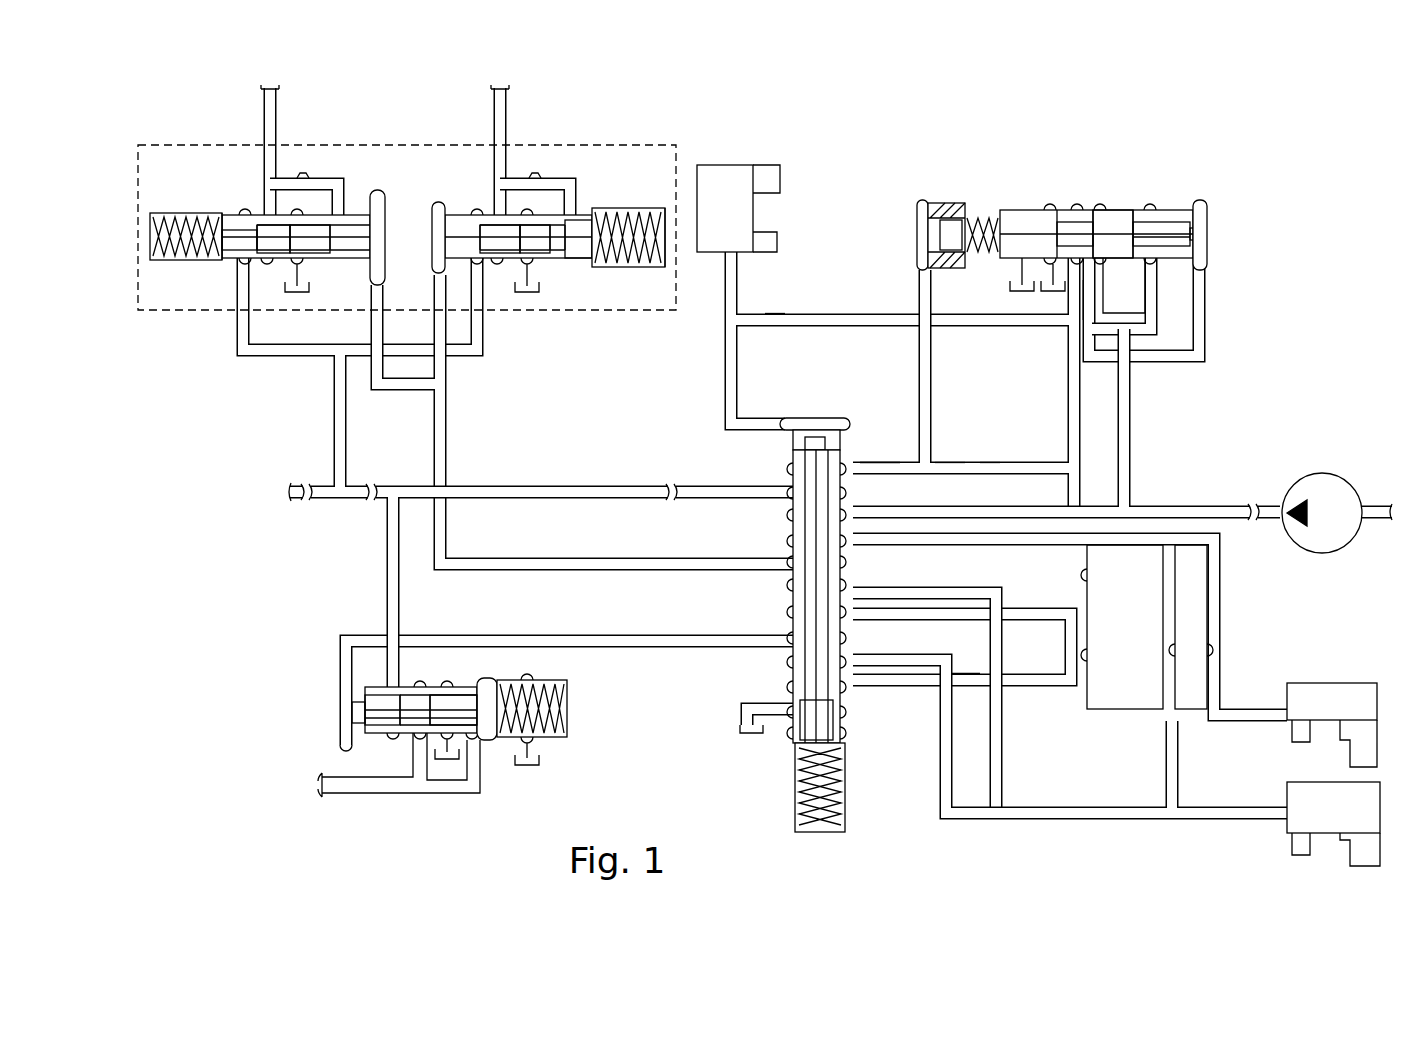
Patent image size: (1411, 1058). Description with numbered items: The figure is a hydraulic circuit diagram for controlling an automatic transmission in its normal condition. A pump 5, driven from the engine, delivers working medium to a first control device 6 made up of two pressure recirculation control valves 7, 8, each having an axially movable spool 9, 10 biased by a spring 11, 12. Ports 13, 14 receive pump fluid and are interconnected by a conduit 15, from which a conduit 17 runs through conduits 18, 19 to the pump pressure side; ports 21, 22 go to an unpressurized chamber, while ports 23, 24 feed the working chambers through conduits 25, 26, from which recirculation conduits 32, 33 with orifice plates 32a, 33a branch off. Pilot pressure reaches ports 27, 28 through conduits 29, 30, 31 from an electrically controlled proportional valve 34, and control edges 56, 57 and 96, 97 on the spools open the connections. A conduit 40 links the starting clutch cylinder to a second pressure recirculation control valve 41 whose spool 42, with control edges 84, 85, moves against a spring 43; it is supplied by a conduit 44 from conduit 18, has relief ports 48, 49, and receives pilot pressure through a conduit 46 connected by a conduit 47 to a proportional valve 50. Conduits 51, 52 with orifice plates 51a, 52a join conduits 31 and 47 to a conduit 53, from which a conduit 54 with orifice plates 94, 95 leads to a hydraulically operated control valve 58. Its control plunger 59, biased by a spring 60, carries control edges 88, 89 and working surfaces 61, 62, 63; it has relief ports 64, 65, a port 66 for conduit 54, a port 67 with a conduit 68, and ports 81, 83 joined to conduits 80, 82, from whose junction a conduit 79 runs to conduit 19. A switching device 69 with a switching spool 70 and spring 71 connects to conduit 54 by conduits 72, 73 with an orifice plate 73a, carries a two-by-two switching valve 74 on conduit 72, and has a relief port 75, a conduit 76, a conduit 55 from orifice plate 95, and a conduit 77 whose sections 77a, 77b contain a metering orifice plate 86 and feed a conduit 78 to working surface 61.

The pump 5 is at (1315, 474).
The first control device 6 is at (418, 145).
The pressure recirculation control valve 7 is at (203, 210).
The pressure recirculation control valve 8 is at (617, 208).
The spool 9 is at (228, 251).
The spool 10 is at (568, 262).
The spring 11 is at (166, 259).
The spring 12 is at (650, 264).
The port 13 is at (241, 266).
The port 14 is at (480, 266).
The conduit 15 is at (270, 357).
The conduit 17 is at (333, 447).
The conduit 18 is at (505, 488).
The conduit 19 is at (975, 507).
The port 21 is at (300, 266).
The port 22 is at (535, 266).
The port 23 is at (258, 210).
The port 24 is at (490, 208).
The conduit 25 is at (278, 112).
The conduit 26 is at (506, 112).
The port 27 is at (382, 273).
The port 28 is at (436, 263).
The conduit 29 is at (387, 391).
The conduit 30 is at (505, 558).
The conduit 31 is at (965, 590).
The conduit 32 is at (343, 182).
The orifice plate 32a is at (306, 176).
The conduit 33 is at (575, 182).
The orifice plate 33a is at (538, 176).
The second control device 34 is at (1320, 713).
The conduit 40 is at (365, 793).
The first control device 41 is at (574, 731).
The spool 42 is at (376, 696).
The spring 43 is at (540, 690).
The conduit 44 is at (385, 602).
The conduit 46 is at (505, 637).
The conduit 47 is at (895, 655).
The port 48 is at (470, 757).
The port 49 is at (542, 751).
The second control device 50 is at (1320, 816).
The conduit 51 is at (1222, 590).
The orifice plate 51a is at (1215, 653).
The conduit 52 is at (1180, 760).
The orifice plate 52a is at (1195, 655).
The conduit 53 is at (1105, 548).
The conduit 54 is at (1068, 387).
The conduit 55 is at (965, 692).
The control edge 56 is at (257, 233).
The control edge 57 is at (292, 246).
The control valve 58 is at (1027, 184).
The control plunger 59 is at (1180, 226).
The spring 60 is at (975, 213).
The first working surface 61 is at (928, 242).
The second working surface 62 is at (1145, 226).
The third working surface 63 is at (1200, 229).
The port 64 is at (1012, 272).
The port 65 is at (1045, 290).
The port 66 is at (1070, 285).
The port 67 is at (1207, 258).
The conduit 68 is at (1207, 352).
The switching device 69 is at (840, 410).
The switching spool 70 is at (834, 722).
The spring 71 is at (842, 786).
The conduit 72 is at (740, 372).
The conduit 73 is at (825, 319).
The orifice plate 73a is at (775, 319).
The 2/2 switching valve 74 is at (713, 195).
The port 75 is at (775, 706).
The conduit 76 is at (1025, 617).
The conduit 77 is at (1043, 458).
The section 77a is at (875, 475).
The section 77b is at (950, 461).
The conduit 78 is at (918, 410).
The conduit 79 is at (1132, 433).
The conduit 80 is at (1089, 316).
The port 81 is at (1110, 268).
The conduit 82 is at (1152, 340).
The port 83 is at (1155, 268).
The control edge 84 is at (380, 734).
The control edge 85 is at (440, 693).
The metering orifice plate 86 is at (990, 461).
The control edge 88 is at (1050, 209).
The control edge 89 is at (1115, 211).
The orifice plate 94 is at (1090, 585).
The orifice plate 95 is at (1090, 655).
The control edge 96 is at (488, 232).
The control edge 97 is at (522, 246).